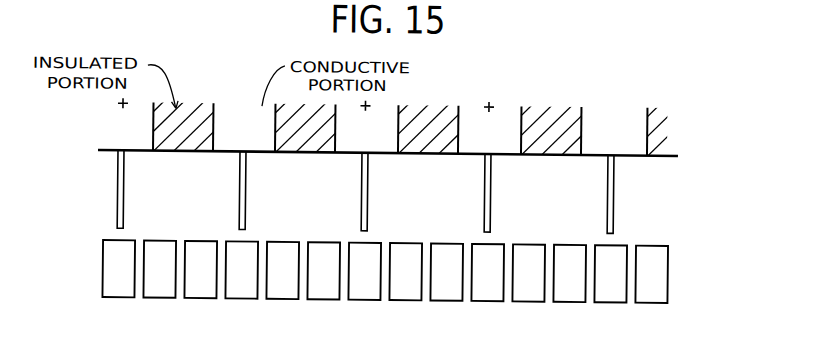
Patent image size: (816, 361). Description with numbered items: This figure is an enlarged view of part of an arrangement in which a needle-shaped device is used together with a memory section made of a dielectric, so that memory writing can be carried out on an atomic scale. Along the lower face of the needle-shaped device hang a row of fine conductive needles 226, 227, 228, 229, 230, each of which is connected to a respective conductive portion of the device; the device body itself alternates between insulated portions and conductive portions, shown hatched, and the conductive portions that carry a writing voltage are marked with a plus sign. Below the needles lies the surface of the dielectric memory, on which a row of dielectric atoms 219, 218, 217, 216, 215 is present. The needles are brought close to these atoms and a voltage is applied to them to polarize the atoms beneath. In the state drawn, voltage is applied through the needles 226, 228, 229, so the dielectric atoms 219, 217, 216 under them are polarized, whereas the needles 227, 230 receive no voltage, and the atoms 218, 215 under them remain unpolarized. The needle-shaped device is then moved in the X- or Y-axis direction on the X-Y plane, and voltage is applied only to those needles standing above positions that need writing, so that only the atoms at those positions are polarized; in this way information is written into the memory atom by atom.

The dielectric atom 215 is at (612, 297).
The dielectric atom 216 is at (490, 297).
The dielectric atom 217 is at (367, 297).
The dielectric atom 218 is at (240, 297).
The dielectric atom 219 is at (124, 297).
The fine conductive needle 226 is at (124, 180).
The fine conductive needle 227 is at (246, 180).
The fine conductive needle 228 is at (368, 180).
The fine conductive needle 229 is at (491, 180).
The fine conductive needle 230 is at (614, 180).